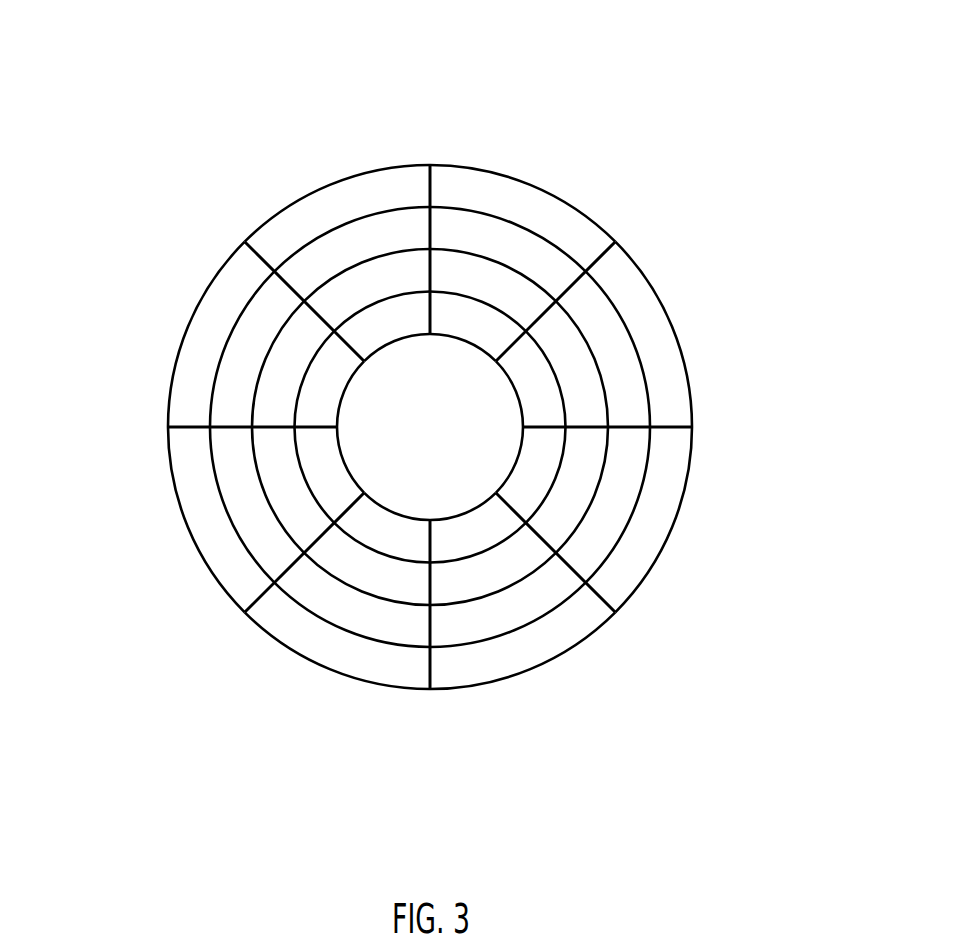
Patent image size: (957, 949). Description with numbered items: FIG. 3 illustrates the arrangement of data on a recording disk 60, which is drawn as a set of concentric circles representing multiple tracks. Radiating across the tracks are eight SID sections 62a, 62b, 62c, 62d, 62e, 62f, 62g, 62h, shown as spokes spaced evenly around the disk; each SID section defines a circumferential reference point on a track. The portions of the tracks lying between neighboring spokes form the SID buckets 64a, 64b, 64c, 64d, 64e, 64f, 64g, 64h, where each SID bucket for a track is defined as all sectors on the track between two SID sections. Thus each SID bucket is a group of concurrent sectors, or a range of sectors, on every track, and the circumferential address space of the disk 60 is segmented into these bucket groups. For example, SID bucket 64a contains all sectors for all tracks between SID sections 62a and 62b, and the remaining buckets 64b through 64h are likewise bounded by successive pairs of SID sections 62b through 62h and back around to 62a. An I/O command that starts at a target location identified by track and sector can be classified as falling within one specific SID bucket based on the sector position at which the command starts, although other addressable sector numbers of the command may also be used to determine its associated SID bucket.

The SID wheel / bucket structure 60 is at (430, 438).
The SID section 62a is at (433, 183).
The SID section 62b is at (597, 252).
The SID section 62c is at (678, 424).
The SID section 62d is at (600, 605).
The SID section 62e is at (427, 683).
The SID section 62f is at (263, 605).
The SID section 62g is at (185, 424).
The SID section 62h is at (258, 252).
The SID bucket 64a is at (530, 202).
The SID bucket 64b is at (658, 350).
The SID bucket 64c is at (660, 520).
The SID bucket 64d is at (520, 657).
The SID bucket 64e is at (338, 657).
The SID bucket 64f is at (200, 517).
The SID bucket 64g is at (200, 351).
The SID bucket 64h is at (342, 195).